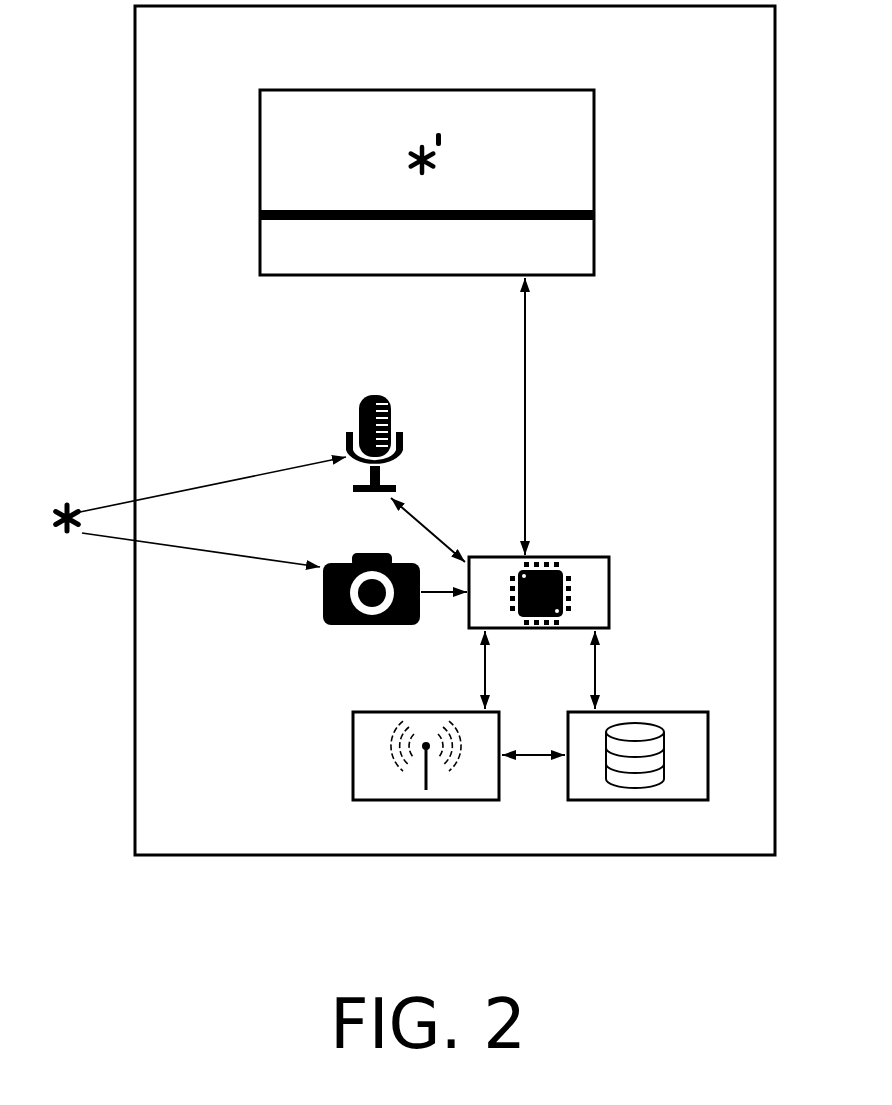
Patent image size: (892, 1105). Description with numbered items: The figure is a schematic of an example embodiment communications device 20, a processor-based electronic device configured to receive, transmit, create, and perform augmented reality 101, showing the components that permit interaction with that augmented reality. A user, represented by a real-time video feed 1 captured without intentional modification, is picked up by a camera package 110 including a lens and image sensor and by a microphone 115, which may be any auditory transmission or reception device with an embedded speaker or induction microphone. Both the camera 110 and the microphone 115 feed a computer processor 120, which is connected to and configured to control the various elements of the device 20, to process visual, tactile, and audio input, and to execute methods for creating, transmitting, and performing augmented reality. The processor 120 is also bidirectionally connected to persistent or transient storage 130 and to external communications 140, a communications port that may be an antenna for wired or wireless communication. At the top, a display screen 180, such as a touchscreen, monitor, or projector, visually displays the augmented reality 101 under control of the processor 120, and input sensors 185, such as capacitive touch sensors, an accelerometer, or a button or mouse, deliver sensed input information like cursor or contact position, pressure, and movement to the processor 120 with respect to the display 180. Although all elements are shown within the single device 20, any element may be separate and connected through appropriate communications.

The real-time video feed 1 is at (58, 512).
The communications device 20 is at (173, 856).
The augmented reality 101 is at (421, 145).
The camera package 110 is at (323, 590).
The microphone 115 is at (347, 441).
The computer processor 120 is at (479, 556).
The storage 130 is at (691, 713).
The communications port 140 is at (353, 754).
The display screen 180 is at (258, 128).
The input sensors 185 is at (390, 276).